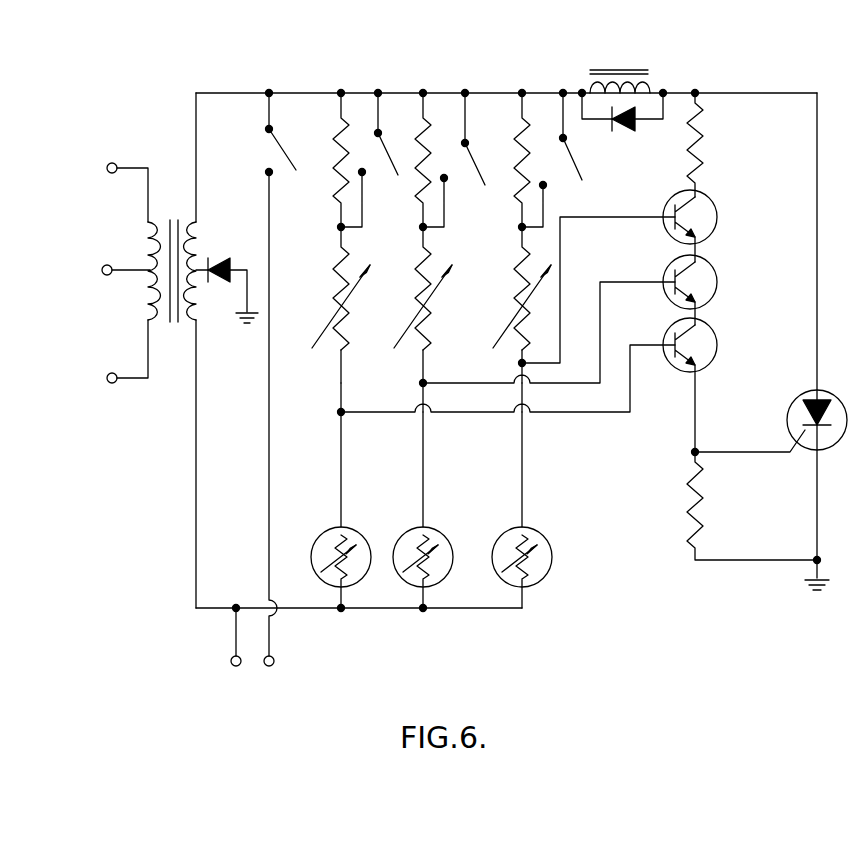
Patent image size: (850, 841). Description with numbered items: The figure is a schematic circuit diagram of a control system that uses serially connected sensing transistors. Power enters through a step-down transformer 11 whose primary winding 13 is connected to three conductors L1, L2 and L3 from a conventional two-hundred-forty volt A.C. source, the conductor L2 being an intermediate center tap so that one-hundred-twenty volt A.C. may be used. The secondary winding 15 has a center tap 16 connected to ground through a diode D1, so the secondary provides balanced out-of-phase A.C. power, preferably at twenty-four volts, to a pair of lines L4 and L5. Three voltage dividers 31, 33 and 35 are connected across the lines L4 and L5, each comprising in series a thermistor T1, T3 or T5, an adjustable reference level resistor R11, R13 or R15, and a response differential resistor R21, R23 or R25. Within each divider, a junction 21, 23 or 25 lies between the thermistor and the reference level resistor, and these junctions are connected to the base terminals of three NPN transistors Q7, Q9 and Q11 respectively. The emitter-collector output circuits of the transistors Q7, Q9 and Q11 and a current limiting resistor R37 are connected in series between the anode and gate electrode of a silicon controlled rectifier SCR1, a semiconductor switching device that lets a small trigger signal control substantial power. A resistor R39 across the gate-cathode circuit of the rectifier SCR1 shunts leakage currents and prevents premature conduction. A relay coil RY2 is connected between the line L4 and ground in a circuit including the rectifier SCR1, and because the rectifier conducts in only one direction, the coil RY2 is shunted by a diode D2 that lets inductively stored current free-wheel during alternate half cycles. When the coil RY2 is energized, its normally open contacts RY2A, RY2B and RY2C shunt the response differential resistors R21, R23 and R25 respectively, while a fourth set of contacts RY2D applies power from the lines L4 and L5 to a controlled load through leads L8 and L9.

The conductor L1 is at (125, 158).
The conductor L2 is at (139, 273).
The conductor L3 is at (131, 383).
The line L4 is at (244, 91).
The line L5 is at (395, 612).
The lead L8 is at (234, 638).
The lead L9 is at (272, 636).
The step-down transformer 11 is at (172, 216).
The primary winding 13 is at (150, 233).
The secondary winding 15 is at (198, 233).
The center tap 16 is at (204, 305).
The diode D1 is at (221, 260).
The diode D2 is at (632, 128).
The relay coil RY2 is at (592, 72).
The relay contacts RY2A is at (577, 155).
The relay contacts RY2B is at (480, 162).
The relay contacts RY2C is at (393, 148).
The relay contacts RY2D is at (288, 146).
The response differential resistor R25 is at (334, 196).
The response differential resistor R23 is at (418, 196).
The response differential resistor R21 is at (517, 192).
The adjustable reference level resistor R15 is at (343, 312).
The adjustable reference level resistor R13 is at (422, 312).
The adjustable reference level resistor R11 is at (518, 290).
The current limiting resistor R37 is at (705, 144).
The resistor R39 is at (703, 508).
The NPN transistor Q7 is at (718, 217).
The NPN transistor Q9 is at (718, 282).
The NPN transistor Q11 is at (718, 345).
The silicon controlled rectifier SCR1 is at (788, 418).
The thermistor T1 is at (509, 534).
The thermistor T3 is at (409, 534).
The thermistor T5 is at (326, 534).
The junction 21 is at (520, 365).
The junction 23 is at (420, 383).
The junction 25 is at (344, 414).
The voltage divider 31 is at (512, 443).
The voltage divider 33 is at (432, 360).
The voltage divider 35 is at (332, 388).